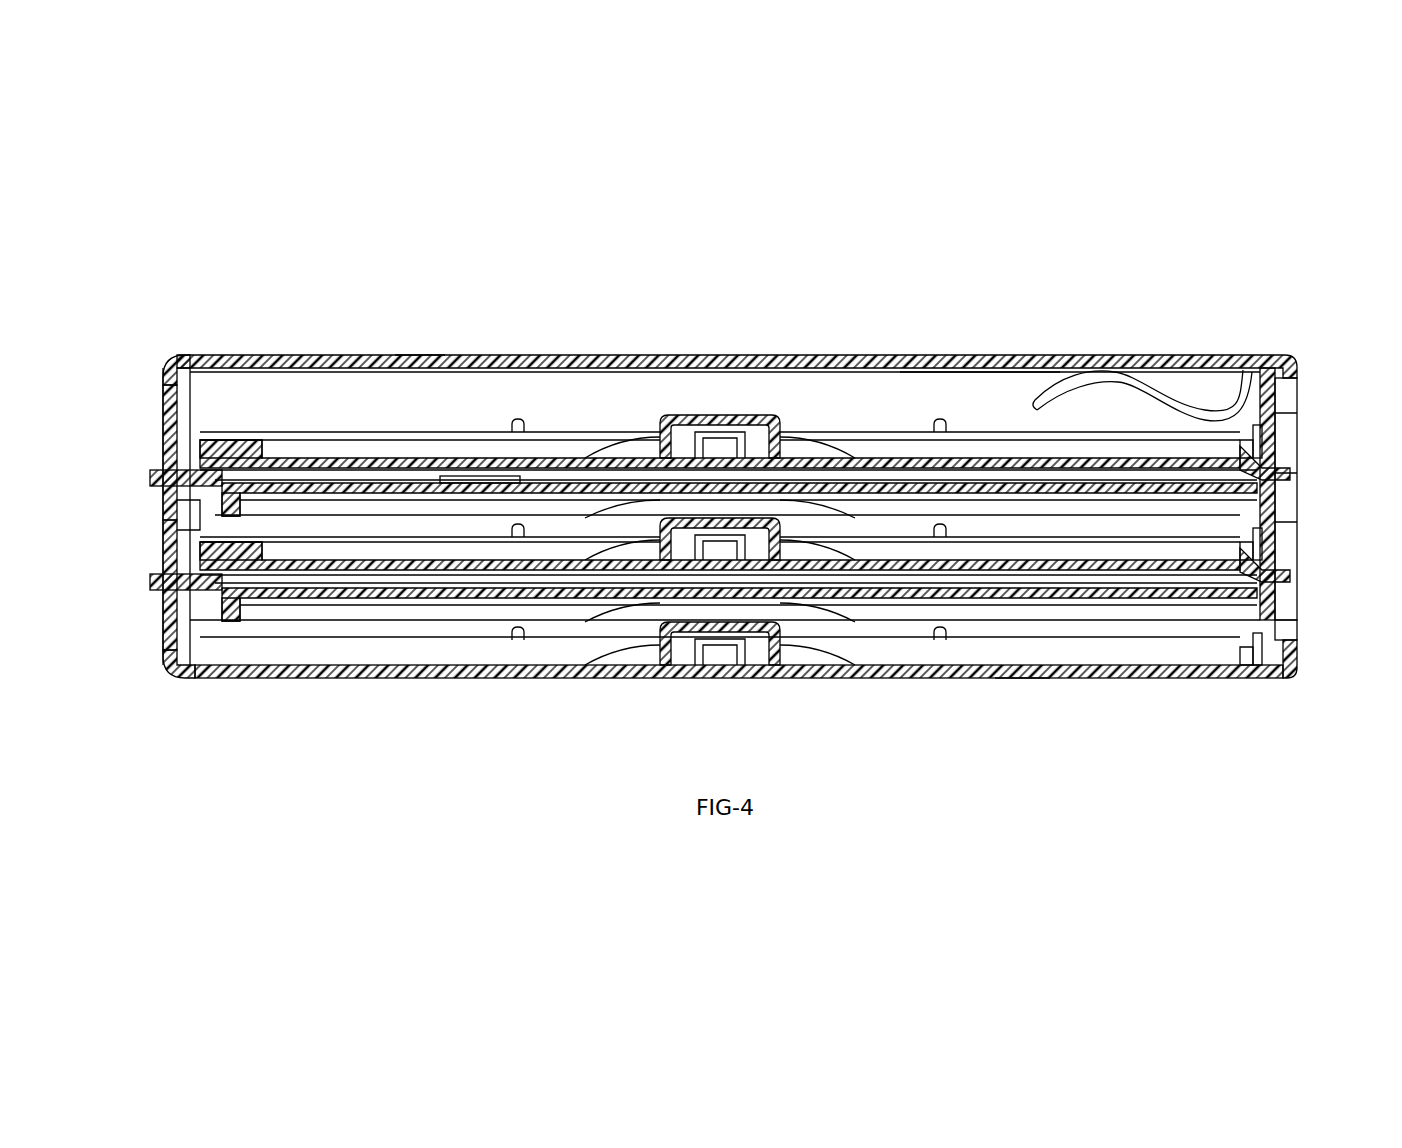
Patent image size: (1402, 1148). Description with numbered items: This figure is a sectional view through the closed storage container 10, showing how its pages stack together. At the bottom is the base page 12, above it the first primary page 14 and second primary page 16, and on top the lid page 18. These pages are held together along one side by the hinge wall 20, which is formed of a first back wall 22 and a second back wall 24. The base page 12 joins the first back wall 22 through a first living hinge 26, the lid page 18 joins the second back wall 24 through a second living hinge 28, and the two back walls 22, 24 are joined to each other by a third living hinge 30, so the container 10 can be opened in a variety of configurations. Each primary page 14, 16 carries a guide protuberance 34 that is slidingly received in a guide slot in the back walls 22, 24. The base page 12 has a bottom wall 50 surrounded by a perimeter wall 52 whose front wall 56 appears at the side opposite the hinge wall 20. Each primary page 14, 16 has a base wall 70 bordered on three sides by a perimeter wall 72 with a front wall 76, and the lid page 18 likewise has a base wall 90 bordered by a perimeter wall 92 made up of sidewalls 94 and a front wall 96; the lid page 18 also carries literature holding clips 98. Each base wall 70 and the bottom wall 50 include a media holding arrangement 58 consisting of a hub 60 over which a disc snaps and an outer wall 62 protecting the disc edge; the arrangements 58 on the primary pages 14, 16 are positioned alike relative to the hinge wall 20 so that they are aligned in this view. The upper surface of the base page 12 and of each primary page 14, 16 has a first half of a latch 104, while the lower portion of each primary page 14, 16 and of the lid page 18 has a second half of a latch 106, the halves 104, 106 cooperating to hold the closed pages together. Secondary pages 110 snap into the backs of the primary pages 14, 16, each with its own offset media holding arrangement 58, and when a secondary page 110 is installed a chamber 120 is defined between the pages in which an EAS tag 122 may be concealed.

The storage container 10 is at (1092, 283).
The base page 12 is at (950, 682).
The first primary page 14 is at (1035, 533).
The second primary page 16 is at (365, 436).
The lid page 18 is at (299, 350).
The hinge wall 20 is at (158, 545).
The first back wall 22 is at (170, 622).
The second back wall 24 is at (165, 410).
The first living hinge 26 is at (172, 678).
The second living hinge 28 is at (175, 365).
The third living hinge 30 is at (175, 518).
The guide protuberance 34 is at (165, 478).
The bottom wall 50 is at (1025, 680).
The perimeter wall 52 is at (1302, 655).
The front wall 56 is at (1300, 630).
The media holding arrangement 58 is at (683, 518).
The hub 60 is at (745, 418).
The outer wall 62 is at (290, 550).
The base wall 70 is at (912, 458).
The perimeter wall 72 is at (1302, 495).
The front wall 76 is at (1302, 470).
The base wall 90 is at (418, 355).
The perimeter wall 92 is at (1302, 375).
The sidewalls 94 is at (985, 385).
The front wall 96 is at (1300, 400).
The literature holding clips 98 is at (1138, 385).
The first half of a latch 104 is at (1270, 450).
The second half of a latch 106 is at (1262, 435).
The secondary page 110 is at (385, 507).
The chamber 120 is at (565, 462).
The EAS tag 122 is at (465, 474).